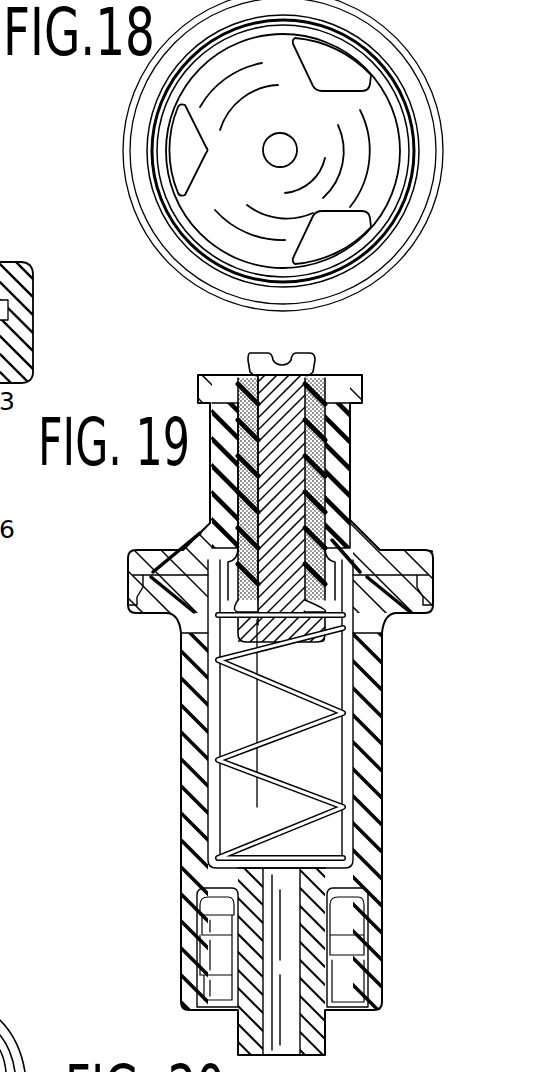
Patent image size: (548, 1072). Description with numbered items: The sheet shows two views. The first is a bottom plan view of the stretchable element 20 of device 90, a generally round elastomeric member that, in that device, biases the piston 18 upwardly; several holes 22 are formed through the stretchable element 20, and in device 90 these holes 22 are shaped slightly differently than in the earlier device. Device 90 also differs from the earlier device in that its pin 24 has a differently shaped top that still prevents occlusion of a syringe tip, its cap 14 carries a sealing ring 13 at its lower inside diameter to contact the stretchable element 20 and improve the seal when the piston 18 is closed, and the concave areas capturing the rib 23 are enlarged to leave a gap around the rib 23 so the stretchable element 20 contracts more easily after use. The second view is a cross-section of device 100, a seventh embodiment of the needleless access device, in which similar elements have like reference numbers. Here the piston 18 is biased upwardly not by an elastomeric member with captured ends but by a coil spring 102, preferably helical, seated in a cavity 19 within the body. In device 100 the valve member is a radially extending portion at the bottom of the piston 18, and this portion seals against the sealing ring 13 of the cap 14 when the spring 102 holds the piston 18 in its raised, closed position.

In FIG. 18, the stretchable element 20 is at (163, 256).
In FIG. 18, the holes 22 is at (330, 64).
In FIG. 18, the cap 14 is at (0, 240).
In FIG. 18, the rib 23 is at (10, 262).
In FIG. 19, the device 100 is at (181, 717).
In FIG. 19, the sealing ring 13 is at (232, 563).
In FIG. 19, the piston 18 is at (314, 450).
In FIG. 19, the cavity 19 is at (333, 763).
In FIG. 19, the coil spring 102 is at (340, 712).
In FIG. 19, the pin 24 is at (274, 536).
In FIG. 19, the device 90 is at (0, 975).